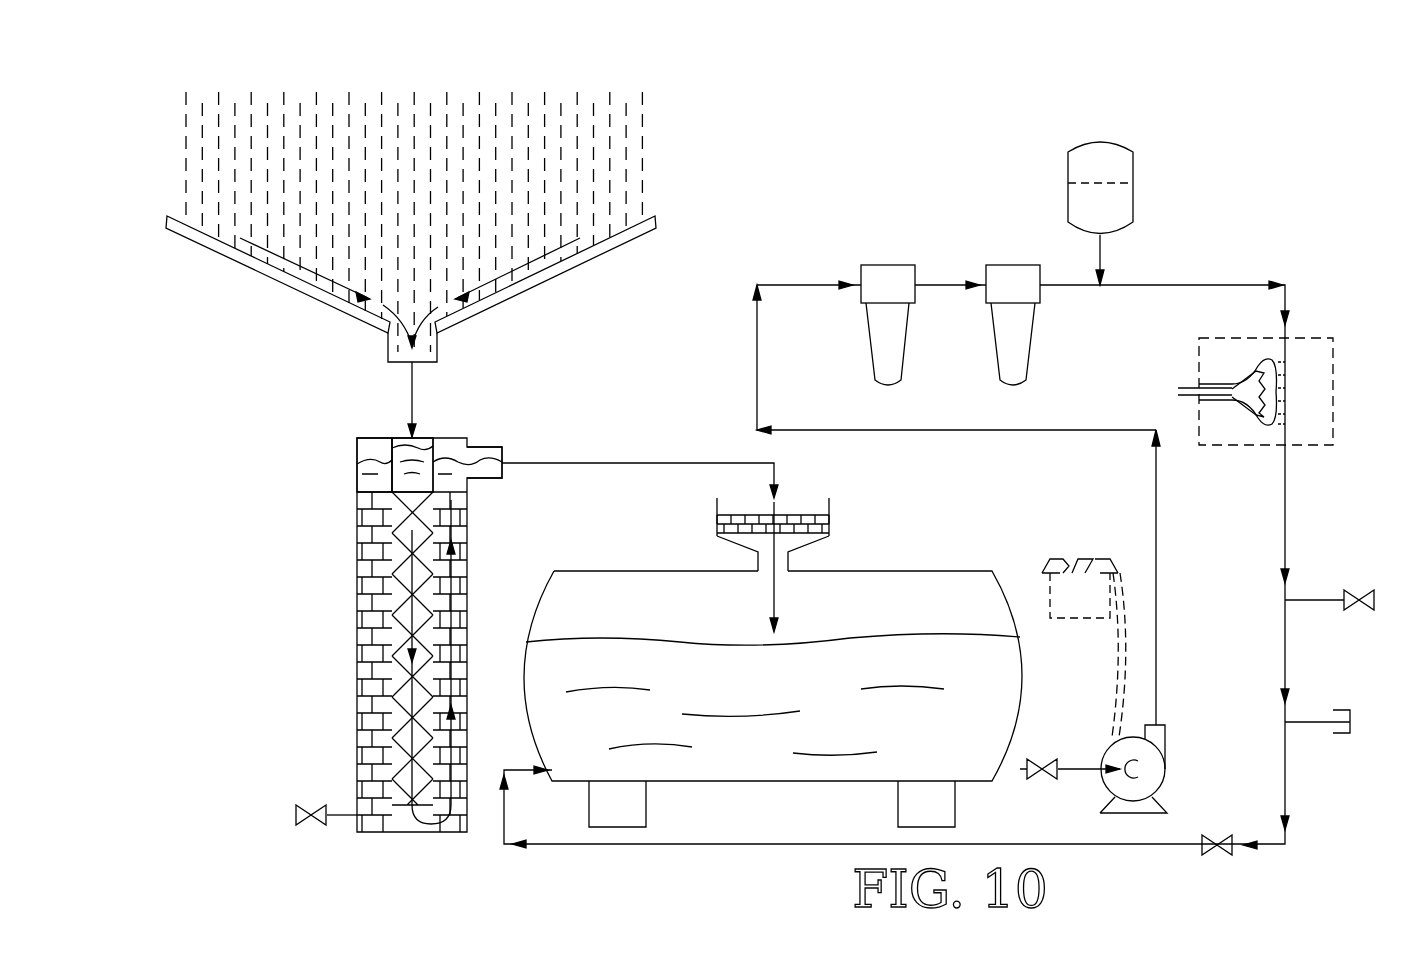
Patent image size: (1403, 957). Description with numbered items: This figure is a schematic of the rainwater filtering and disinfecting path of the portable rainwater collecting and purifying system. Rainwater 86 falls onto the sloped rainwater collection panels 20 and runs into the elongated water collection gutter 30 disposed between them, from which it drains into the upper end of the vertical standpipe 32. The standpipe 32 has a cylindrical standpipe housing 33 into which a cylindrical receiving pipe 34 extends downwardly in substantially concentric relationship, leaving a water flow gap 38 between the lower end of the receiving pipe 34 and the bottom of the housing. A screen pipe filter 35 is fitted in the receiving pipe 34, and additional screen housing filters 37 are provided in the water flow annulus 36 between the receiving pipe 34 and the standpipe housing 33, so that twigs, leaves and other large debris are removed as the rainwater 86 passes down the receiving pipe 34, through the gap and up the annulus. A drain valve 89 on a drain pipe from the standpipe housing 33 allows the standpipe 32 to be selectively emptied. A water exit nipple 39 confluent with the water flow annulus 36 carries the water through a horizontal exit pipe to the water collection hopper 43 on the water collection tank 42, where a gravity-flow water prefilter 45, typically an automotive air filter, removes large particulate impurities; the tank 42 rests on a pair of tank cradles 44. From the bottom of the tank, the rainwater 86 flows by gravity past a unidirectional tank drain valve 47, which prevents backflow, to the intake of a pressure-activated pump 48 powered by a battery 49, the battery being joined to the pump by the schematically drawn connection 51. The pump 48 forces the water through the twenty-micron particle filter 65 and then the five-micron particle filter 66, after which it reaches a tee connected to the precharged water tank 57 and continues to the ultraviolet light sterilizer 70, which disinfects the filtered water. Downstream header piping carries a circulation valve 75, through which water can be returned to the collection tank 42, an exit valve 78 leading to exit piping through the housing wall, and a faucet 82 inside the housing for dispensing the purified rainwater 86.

The rainwater collection panels 20 is at (267, 290).
The water collection gutter 30 is at (388, 348).
The standpipe 32 is at (343, 510).
The standpipe housing 33 is at (357, 472).
The receiving pipe 34 is at (385, 470).
The screen pipe filter 35 is at (357, 578).
The water flow annulus 36 is at (481, 598).
The screen housing filter 37 is at (370, 662).
The water flow gap 38 is at (398, 838).
The water exit nipple 39 is at (487, 447).
The water collection tank 42 is at (656, 558).
The water collection hopper 43 is at (795, 550).
The tank cradles 44 is at (915, 808).
The gravity-flow water prefilter 45 is at (812, 520).
The tank drain valve 47 is at (1043, 780).
The pump 48 is at (1153, 783).
The battery 49 is at (1100, 560).
The electrical cable 51 is at (1113, 655).
The precharged water tank 57 is at (1090, 170).
The 20-micron particle filter 65 is at (885, 345).
The 5-micron particle filter 66 is at (1010, 335).
The ultraviolet light sterilizer 70 is at (1333, 363).
The circulation valve 75 is at (1218, 842).
The exit valve 78 is at (1358, 592).
The faucet 82 is at (1342, 710).
The rainwater 86 is at (643, 143).
The drain valve 89 is at (310, 822).